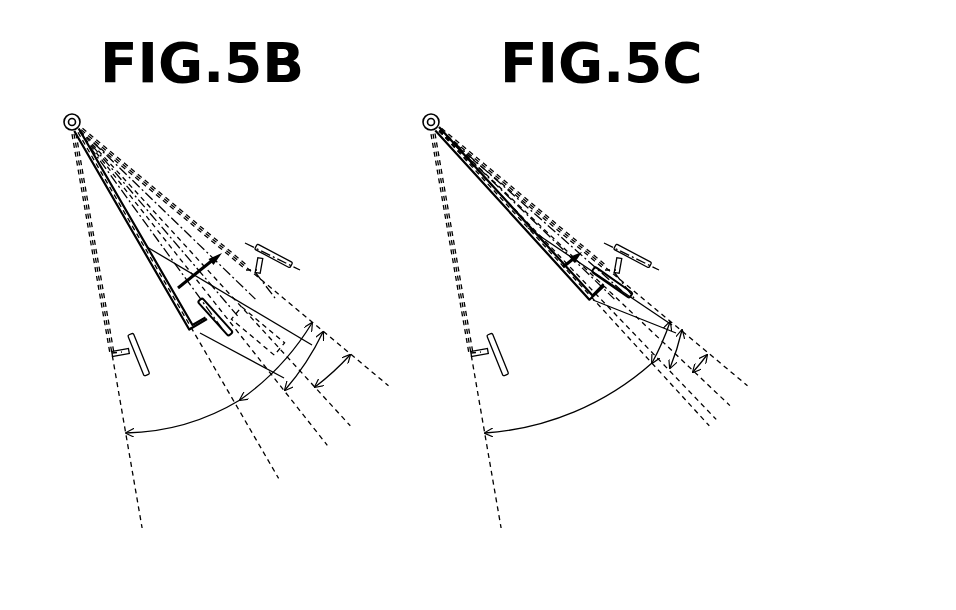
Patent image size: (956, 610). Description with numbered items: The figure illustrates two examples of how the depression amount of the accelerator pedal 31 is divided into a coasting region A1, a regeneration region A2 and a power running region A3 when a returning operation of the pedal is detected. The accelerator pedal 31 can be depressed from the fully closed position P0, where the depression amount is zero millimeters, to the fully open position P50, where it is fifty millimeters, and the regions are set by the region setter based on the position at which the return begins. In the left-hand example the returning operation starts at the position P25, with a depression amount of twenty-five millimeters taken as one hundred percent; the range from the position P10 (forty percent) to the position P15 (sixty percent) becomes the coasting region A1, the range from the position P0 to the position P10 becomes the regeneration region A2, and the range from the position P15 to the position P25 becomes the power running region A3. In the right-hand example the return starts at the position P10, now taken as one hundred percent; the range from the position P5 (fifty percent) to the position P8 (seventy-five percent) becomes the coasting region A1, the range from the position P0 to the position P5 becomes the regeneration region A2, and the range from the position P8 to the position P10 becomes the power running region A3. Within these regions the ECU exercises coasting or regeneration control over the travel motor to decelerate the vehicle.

In FIG. 5B, the accelerator pedal 31 is at (228, 318).
In FIG. 5C, the accelerator pedal 31 is at (632, 293).
In FIG. 5B, the coasting region A1 is at (183, 253).
In FIG. 5C, the coasting region A1 is at (533, 228).
In FIG. 5B, the regeneration region A2 is at (203, 247).
In FIG. 5C, the regeneration region A2 is at (563, 240).
In FIG. 5B, the power running region A3 is at (137, 213).
In FIG. 5C, the power running region A3 is at (623, 320).
In FIG. 5B, the fully open position P50 is at (124, 347).
In FIG. 5C, the fully open position P50 is at (483, 347).
In FIG. 5B, the position with a depression amount of 25 mm P25 is at (220, 320).
In FIG. 5B, the position with a depression amount of 15 mm P15 is at (239, 304).
In FIG. 5B, the position with a depression amount of 10 mm P10 is at (264, 289).
In FIG. 5C, the position with a depression amount of 10 mm P10 is at (579, 296).
In FIG. 5C, the position with a depression amount of 8 mm P8 is at (620, 291).
In FIG. 5C, the position with a depression amount of 5 mm P5 is at (628, 276).
In FIG. 5B, the fully closed position P0 is at (271, 270).
In FIG. 5C, the fully closed position P0 is at (627, 258).